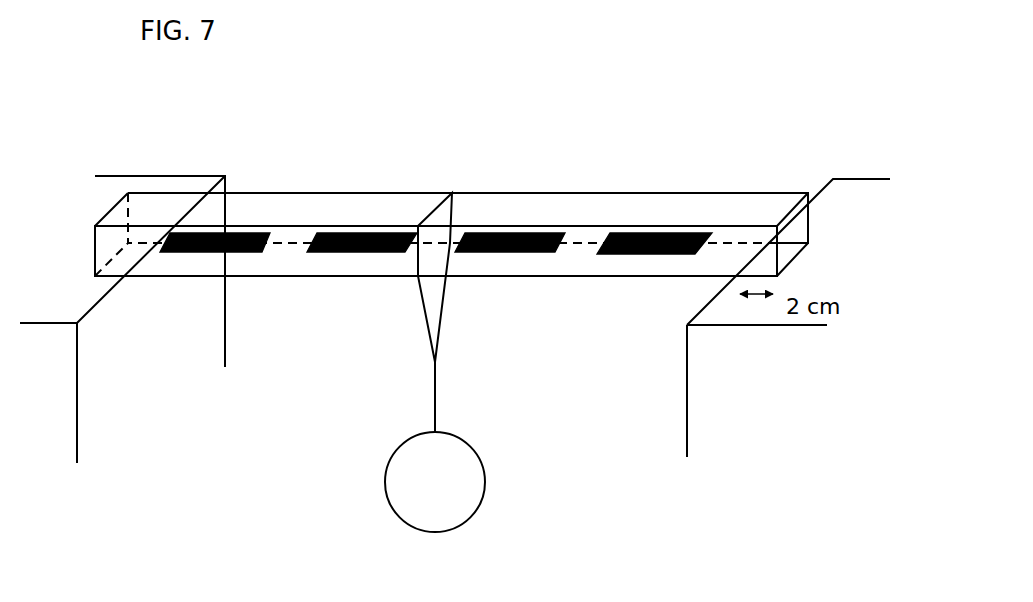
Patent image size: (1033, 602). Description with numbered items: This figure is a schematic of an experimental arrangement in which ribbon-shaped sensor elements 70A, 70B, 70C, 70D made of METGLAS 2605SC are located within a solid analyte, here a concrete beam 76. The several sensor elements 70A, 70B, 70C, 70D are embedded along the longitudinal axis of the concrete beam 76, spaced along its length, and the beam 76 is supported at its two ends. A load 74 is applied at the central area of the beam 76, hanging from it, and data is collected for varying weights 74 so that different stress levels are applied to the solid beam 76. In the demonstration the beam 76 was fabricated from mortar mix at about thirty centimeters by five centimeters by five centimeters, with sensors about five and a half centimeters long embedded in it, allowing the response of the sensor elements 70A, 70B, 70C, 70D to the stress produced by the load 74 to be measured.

The sensor element 70A is at (250, 230).
The sensor element 70B is at (342, 253).
The sensor element 70C is at (518, 255).
The sensor element 70D is at (657, 235).
The load 74 is at (438, 490).
The concrete beam 76 is at (537, 193).